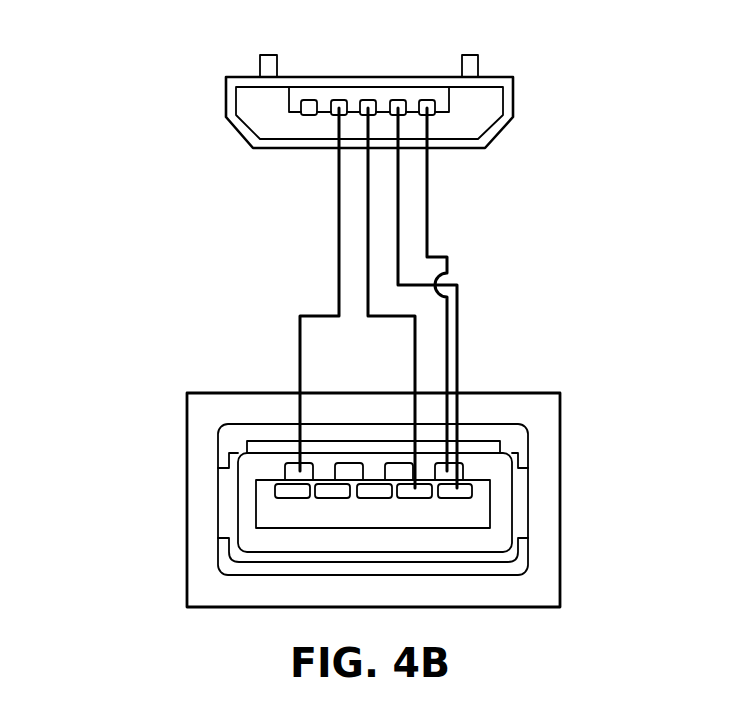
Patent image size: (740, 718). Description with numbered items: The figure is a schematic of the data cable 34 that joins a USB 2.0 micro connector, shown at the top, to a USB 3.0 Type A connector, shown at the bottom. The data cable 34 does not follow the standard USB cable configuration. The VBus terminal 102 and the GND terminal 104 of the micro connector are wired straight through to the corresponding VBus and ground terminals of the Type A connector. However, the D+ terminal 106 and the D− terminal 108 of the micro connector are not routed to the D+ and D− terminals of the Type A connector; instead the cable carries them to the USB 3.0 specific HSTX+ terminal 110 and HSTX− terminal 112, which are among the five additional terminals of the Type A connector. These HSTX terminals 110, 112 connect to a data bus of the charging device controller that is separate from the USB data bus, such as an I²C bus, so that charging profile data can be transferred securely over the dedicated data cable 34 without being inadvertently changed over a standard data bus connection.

The data cable 34 is at (140, 257).
The VBus terminal 102 is at (428, 107).
The GND terminal 104 is at (338, 107).
The D+ terminal 106 is at (370, 107).
The D− terminal 108 is at (398, 107).
The High Speed Transmit+ (HSTX+) terminal 110 is at (472, 492).
The High Speed Transmit− (HSTX−) terminal 112 is at (412, 495).